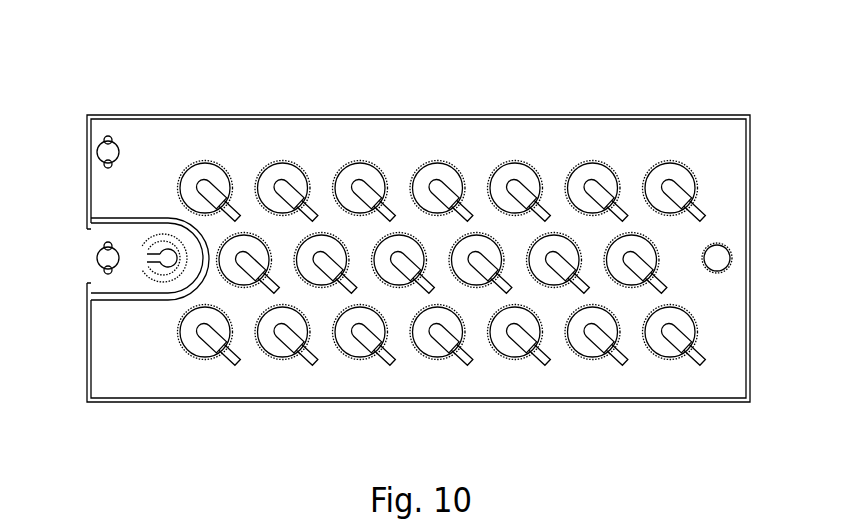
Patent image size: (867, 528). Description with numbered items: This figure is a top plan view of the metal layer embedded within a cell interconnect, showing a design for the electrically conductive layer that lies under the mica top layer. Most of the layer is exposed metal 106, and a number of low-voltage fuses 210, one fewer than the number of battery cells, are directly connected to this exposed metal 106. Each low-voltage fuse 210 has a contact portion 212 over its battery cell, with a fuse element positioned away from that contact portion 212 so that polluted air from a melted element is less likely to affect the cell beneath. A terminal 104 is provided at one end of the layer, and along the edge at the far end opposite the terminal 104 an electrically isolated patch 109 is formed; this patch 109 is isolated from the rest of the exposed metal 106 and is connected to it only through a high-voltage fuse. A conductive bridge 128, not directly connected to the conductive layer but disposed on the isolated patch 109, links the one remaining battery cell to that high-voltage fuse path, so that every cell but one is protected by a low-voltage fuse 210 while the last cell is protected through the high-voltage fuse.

The terminal 104 is at (722, 260).
The exposed metal 106 is at (146, 150).
The electrically isolated patch 109 is at (128, 232).
The conductive bridge 128 is at (150, 262).
The low-voltage fuse 210 is at (443, 201).
The contact portion 212 is at (517, 187).